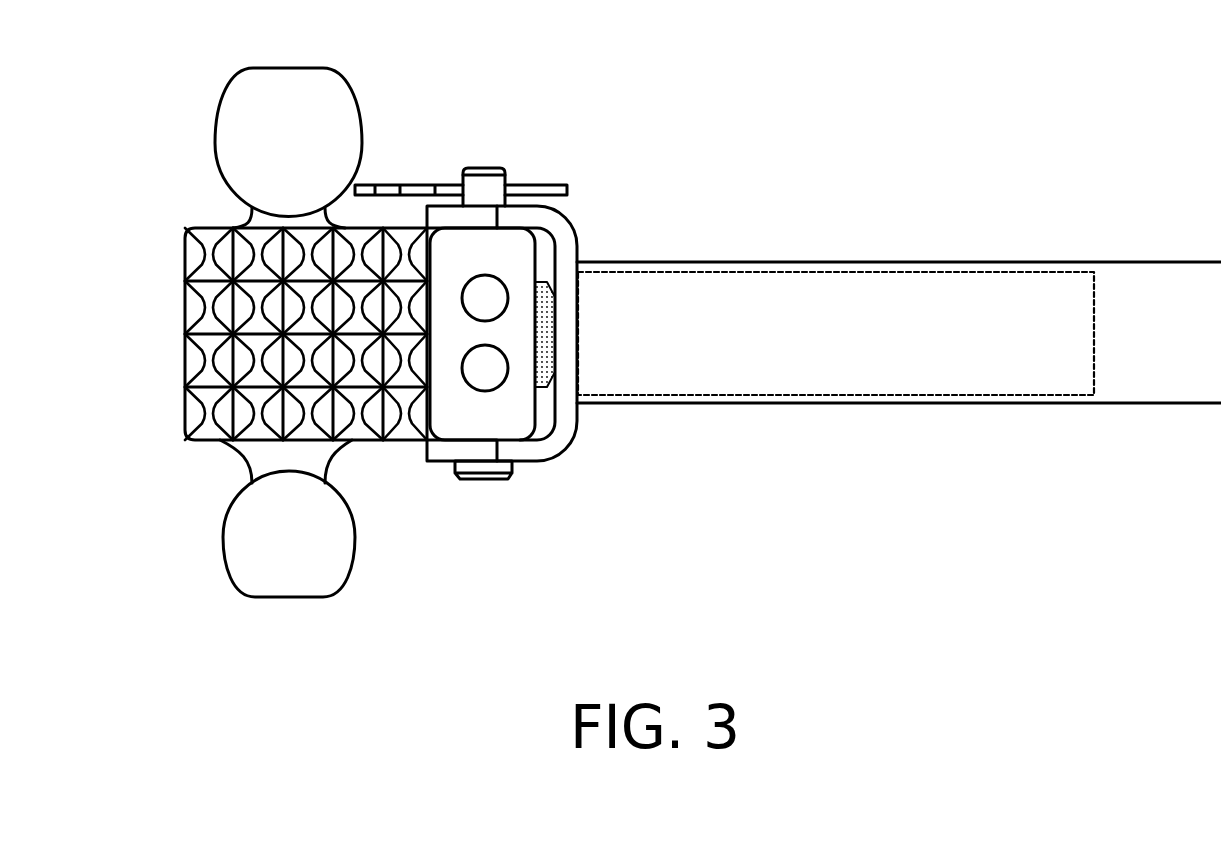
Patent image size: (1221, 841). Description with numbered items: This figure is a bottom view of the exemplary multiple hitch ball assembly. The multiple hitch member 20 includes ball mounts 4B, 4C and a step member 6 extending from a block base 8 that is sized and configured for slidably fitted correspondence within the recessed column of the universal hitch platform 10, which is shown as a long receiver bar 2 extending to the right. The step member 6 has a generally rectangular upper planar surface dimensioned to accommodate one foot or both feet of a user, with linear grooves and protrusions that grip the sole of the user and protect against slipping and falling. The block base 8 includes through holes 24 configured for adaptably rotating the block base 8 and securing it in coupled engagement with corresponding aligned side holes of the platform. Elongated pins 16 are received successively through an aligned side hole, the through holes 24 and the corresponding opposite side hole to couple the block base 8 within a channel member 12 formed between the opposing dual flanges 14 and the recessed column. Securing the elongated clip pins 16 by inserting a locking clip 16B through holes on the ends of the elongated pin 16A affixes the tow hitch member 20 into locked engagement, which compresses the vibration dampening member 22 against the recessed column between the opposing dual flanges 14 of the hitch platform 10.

The receiver tube 2 is at (843, 380).
The ball mount 4B is at (307, 555).
The ball mount 4C is at (247, 108).
The step member 6 is at (262, 345).
The block base 8 is at (535, 404).
The universal hitch platform 10 is at (845, 238).
The channel member 12 is at (543, 426).
The dual flanges 14 is at (512, 217).
The elongated pins 16 is at (542, 319).
The elongated pin 16A is at (507, 173).
The locking clip 16B is at (557, 190).
The multiple hitch member 20 is at (142, 90).
The vibration dampening member 22 is at (550, 345).
The through holes 24 is at (478, 365).